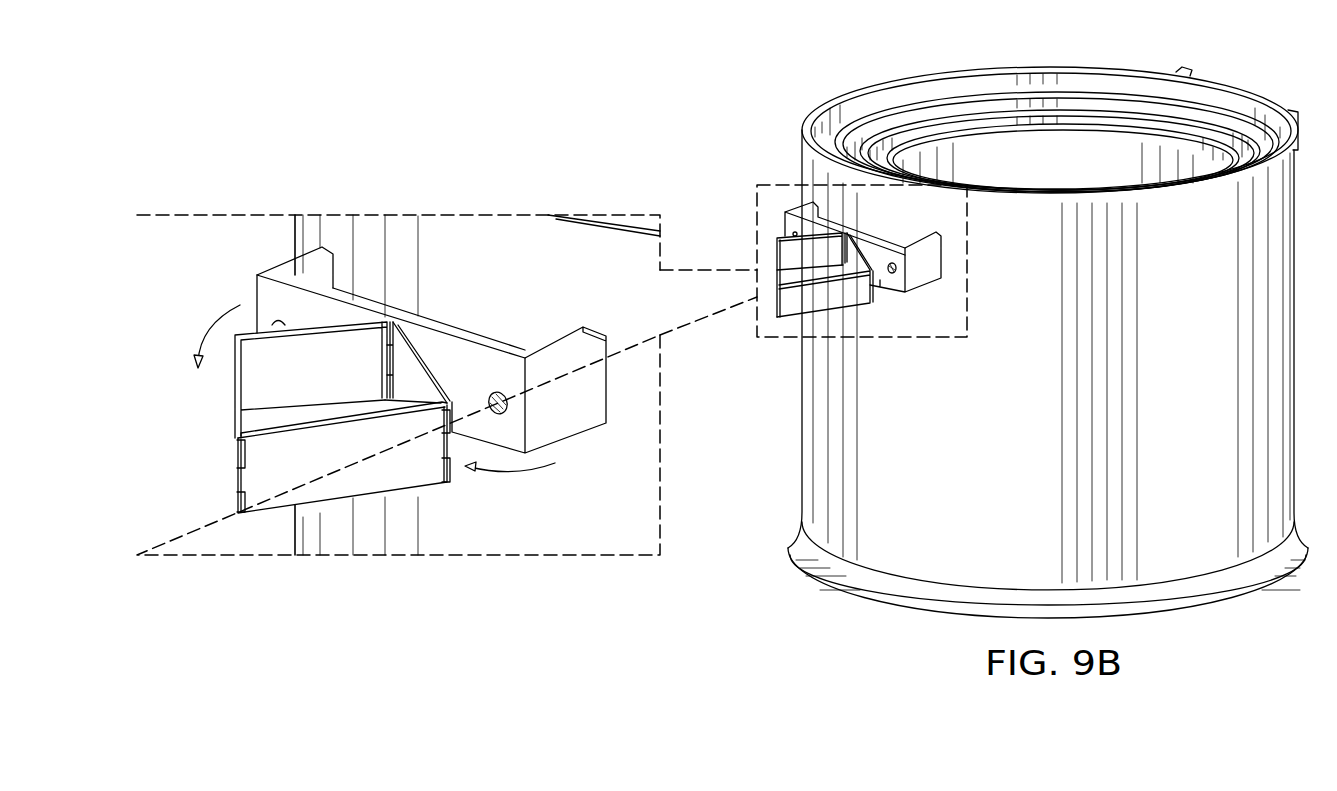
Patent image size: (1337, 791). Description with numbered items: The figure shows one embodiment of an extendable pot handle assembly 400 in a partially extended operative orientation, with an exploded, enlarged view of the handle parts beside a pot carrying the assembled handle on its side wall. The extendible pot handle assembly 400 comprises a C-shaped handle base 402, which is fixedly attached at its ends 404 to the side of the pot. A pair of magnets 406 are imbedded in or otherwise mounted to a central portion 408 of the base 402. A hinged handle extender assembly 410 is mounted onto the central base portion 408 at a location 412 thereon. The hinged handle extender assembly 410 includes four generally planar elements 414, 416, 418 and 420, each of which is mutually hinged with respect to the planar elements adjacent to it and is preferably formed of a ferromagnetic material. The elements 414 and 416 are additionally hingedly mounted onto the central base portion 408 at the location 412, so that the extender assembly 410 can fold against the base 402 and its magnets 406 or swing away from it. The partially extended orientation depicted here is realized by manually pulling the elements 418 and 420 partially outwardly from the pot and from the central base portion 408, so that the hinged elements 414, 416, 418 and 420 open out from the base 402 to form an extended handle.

The extendable pot handle assembly 400 is at (752, 290).
The C-shaped handle base 402 is at (583, 423).
The ends 404 is at (333, 270).
The magnets 406 is at (278, 322).
The central portion 408 is at (425, 340).
The hinged handle extender assembly 410 is at (335, 386).
The location 412 is at (392, 322).
The planar element 414 is at (283, 373).
The planar element 416 is at (420, 378).
The planar element 418 is at (415, 470).
The planar element 420 is at (240, 418).